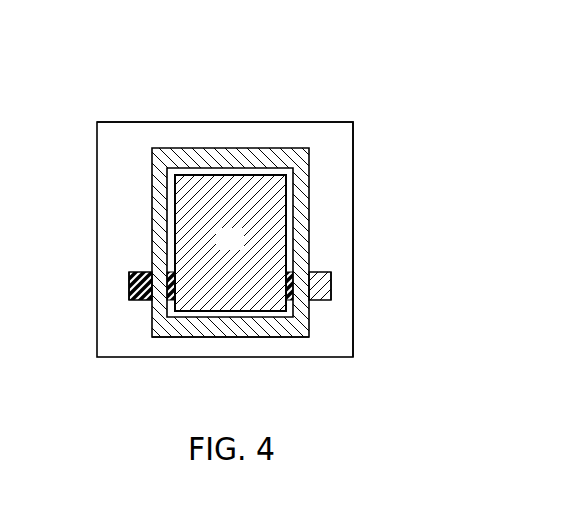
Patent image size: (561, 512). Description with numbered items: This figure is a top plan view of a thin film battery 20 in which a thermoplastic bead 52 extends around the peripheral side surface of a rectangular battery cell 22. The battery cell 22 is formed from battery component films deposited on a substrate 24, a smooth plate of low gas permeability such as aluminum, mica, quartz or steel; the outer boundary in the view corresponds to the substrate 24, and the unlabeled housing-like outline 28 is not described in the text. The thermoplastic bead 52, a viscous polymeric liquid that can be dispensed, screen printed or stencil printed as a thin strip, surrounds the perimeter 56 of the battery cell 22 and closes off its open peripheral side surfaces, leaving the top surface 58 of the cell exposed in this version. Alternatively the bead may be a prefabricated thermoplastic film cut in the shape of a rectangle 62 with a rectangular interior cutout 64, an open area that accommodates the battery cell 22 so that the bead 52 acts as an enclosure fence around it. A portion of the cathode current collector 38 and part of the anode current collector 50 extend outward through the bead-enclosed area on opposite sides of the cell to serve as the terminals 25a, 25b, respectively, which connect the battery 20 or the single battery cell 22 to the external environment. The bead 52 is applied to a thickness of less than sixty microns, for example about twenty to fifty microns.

The thin film battery 20 is at (234, 225).
The battery cell 22 is at (240, 248).
The substrate 24 is at (132, 170).
The terminal 25a is at (132, 306).
The terminal 25b is at (330, 261).
The housing 28 is at (332, 203).
The cathode current collector 38 is at (322, 302).
The anode current collector 50 is at (140, 272).
The thermoplastic bead 52 is at (162, 222).
The perimeter 56 is at (190, 173).
The top surface 58 is at (258, 195).
The rectangle 62 is at (222, 330).
The rectangular interior cutout 64 is at (255, 313).